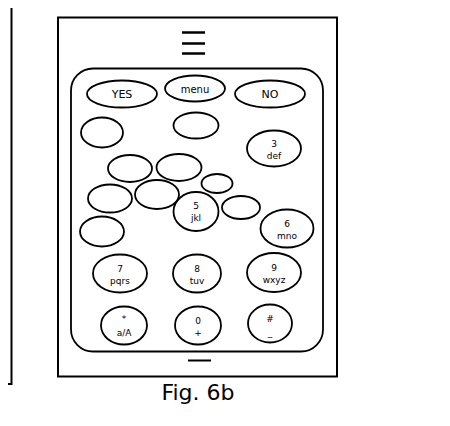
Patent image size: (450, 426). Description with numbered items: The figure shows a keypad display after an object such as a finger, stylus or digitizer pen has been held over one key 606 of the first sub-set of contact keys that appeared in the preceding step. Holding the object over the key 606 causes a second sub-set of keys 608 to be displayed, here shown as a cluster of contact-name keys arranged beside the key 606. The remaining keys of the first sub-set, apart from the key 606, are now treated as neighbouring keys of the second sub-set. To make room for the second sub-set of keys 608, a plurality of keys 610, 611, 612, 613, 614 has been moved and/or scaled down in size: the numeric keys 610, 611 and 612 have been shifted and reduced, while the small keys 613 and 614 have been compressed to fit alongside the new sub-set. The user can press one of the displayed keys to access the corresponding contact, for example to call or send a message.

The key 606 is at (152, 192).
The second sub-set of keys 608 is at (78, 163).
The key 610 is at (85, 123).
The key 611 is at (173, 119).
The key 612 is at (81, 219).
The key 613 is at (215, 172).
The key 614 is at (238, 199).